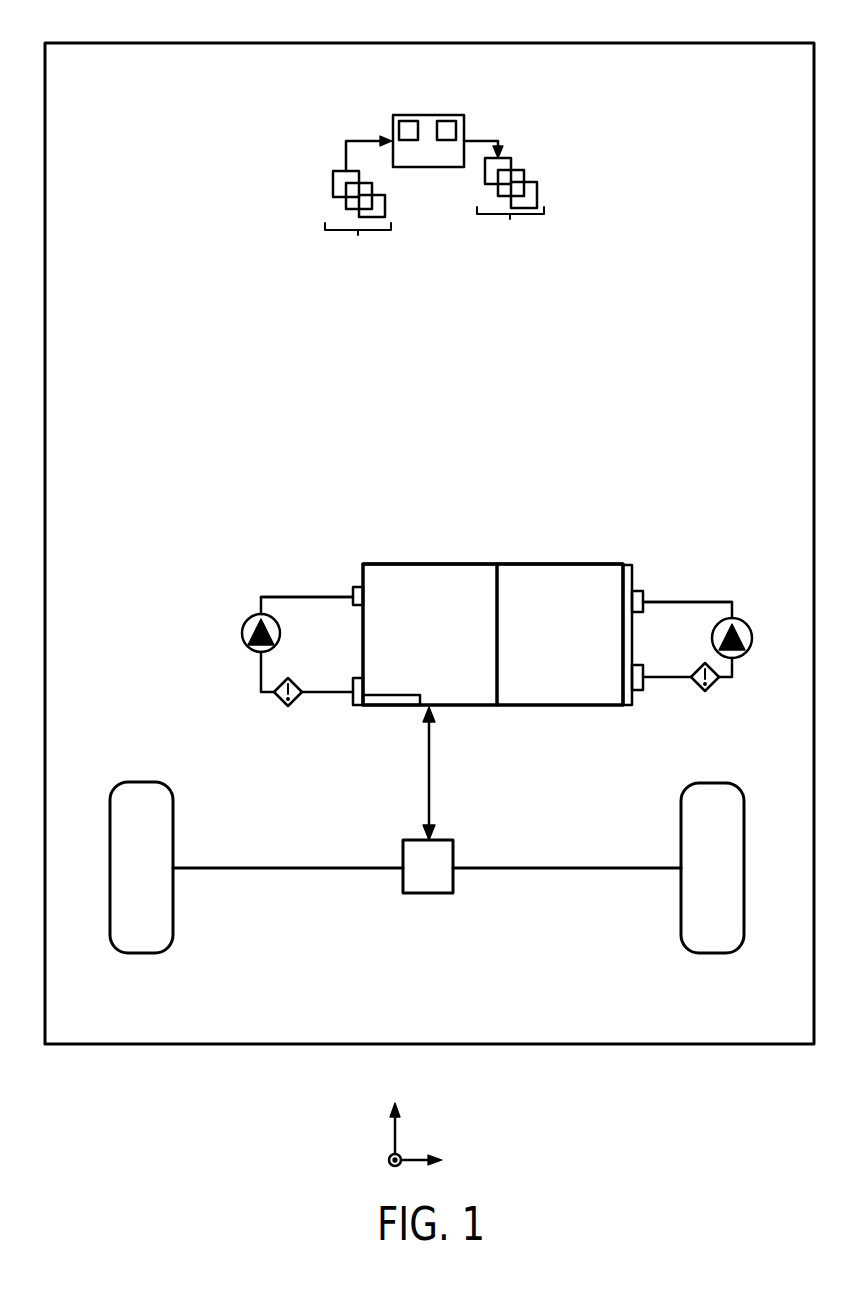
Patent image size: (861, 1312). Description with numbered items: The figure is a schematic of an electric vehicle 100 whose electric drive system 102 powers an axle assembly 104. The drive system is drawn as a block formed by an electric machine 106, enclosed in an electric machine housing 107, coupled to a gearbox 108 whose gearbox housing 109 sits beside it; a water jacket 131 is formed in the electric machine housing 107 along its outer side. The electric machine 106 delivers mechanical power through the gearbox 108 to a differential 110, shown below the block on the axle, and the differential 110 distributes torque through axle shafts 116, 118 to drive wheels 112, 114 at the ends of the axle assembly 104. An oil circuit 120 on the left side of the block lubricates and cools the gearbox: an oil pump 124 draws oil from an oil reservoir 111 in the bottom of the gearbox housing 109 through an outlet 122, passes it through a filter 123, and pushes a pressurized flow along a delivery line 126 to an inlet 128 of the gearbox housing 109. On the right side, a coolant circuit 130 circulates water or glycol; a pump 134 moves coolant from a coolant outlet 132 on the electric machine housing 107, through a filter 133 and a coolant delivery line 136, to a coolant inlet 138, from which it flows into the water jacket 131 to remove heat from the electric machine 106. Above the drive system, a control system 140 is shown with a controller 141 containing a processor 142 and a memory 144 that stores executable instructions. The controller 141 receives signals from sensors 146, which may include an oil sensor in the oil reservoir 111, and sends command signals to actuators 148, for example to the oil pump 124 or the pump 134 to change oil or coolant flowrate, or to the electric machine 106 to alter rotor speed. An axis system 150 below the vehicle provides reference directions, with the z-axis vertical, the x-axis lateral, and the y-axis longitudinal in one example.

The electric vehicle 100 is at (155, 43).
The electric drive system 102 is at (436, 474).
The axle assembly 104 is at (351, 917).
The electric machine 106 is at (581, 647).
The electric machine housing 107 is at (576, 563).
The gearbox 108 is at (446, 647).
The gearbox housing 109 is at (390, 563).
The differential 110 is at (435, 840).
The oil reservoir 111 is at (390, 705).
The drive wheel 112 is at (140, 953).
The drive wheel 114 is at (717, 953).
The axle shaft 116 is at (277, 868).
The axle shaft 118 is at (573, 868).
The oil circuit 120 is at (282, 516).
The outlet 122 is at (357, 705).
The filter 123 is at (280, 700).
The oil pump 124 is at (243, 630).
The delivery line 126 is at (287, 597).
The inlet 128 is at (356, 587).
The coolant circuit 130 is at (724, 520).
The water jacket 131 is at (627, 565).
The coolant outlet 132 is at (638, 690).
The filter 133 is at (713, 687).
The pump 134 is at (749, 645).
The coolant delivery line 136 is at (703, 602).
The coolant inlet 138 is at (638, 612).
The control system 140 is at (302, 117).
The controller 141 is at (418, 115).
The processor 142 is at (399, 128).
The memory 144 is at (456, 128).
The sensors 146 is at (358, 220).
The actuators 148 is at (510, 204).
The axis system 150 is at (462, 1103).